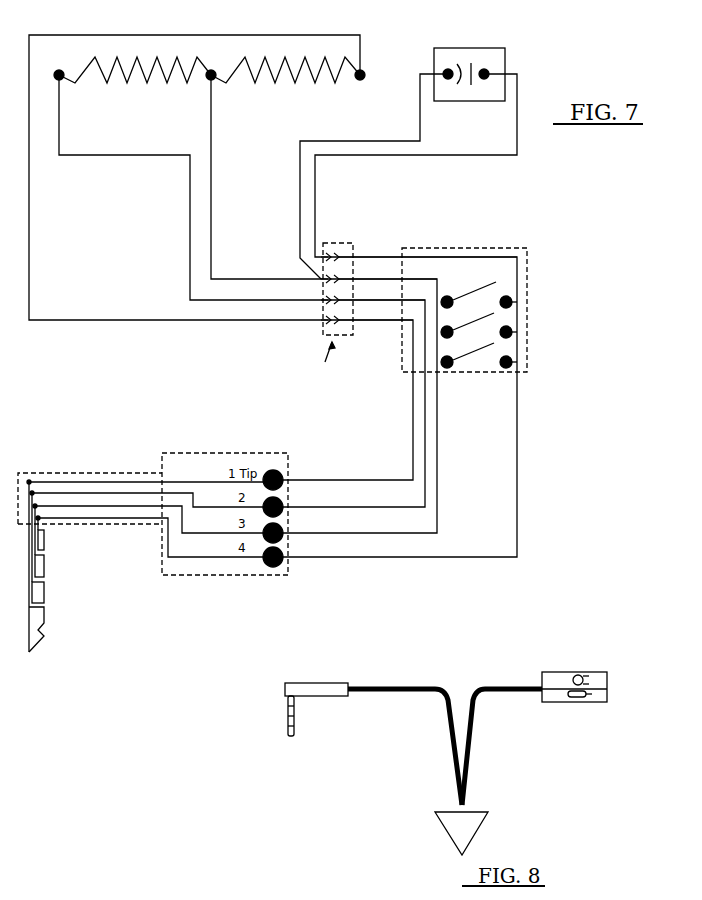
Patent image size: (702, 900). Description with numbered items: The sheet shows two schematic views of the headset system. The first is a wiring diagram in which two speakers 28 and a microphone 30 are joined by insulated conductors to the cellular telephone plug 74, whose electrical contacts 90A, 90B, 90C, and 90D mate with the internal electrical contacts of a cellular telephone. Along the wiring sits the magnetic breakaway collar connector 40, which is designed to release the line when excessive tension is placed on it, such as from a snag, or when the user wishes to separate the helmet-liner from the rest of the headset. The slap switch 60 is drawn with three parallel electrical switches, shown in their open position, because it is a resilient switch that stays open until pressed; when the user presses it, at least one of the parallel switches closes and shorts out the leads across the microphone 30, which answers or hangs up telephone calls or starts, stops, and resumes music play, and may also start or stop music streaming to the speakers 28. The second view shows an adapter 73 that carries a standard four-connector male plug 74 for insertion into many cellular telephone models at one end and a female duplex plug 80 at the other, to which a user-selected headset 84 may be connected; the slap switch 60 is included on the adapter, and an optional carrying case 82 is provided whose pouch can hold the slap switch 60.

In FIG. 7, the speakers 28 is at (86, 58).
In FIG. 7, the microphone 30 is at (431, 48).
In FIG. 7, the breakaway connector 40 is at (318, 327).
In FIG. 7, the slap switch 60 is at (530, 336).
In FIG. 8, the slap switch 60 is at (445, 828).
In FIG. 7, the cellular telephone plug 74 is at (64, 587).
In FIG. 8, the cellular telephone plug 74 is at (312, 718).
In FIG. 7, the electrical contact 90A is at (48, 616).
In FIG. 7, the electrical contact 90B is at (48, 591).
In FIG. 7, the electrical contact 90C is at (48, 566).
In FIG. 7, the electrical contact 90D is at (46, 540).
In FIG. 8, the adapter 73 is at (415, 675).
In FIG. 8, the female duplex plug 80 is at (594, 707).
In FIG. 8, the carrying case 82 is at (593, 673).
In FIG. 8, the user-selected headset 84 is at (598, 702).